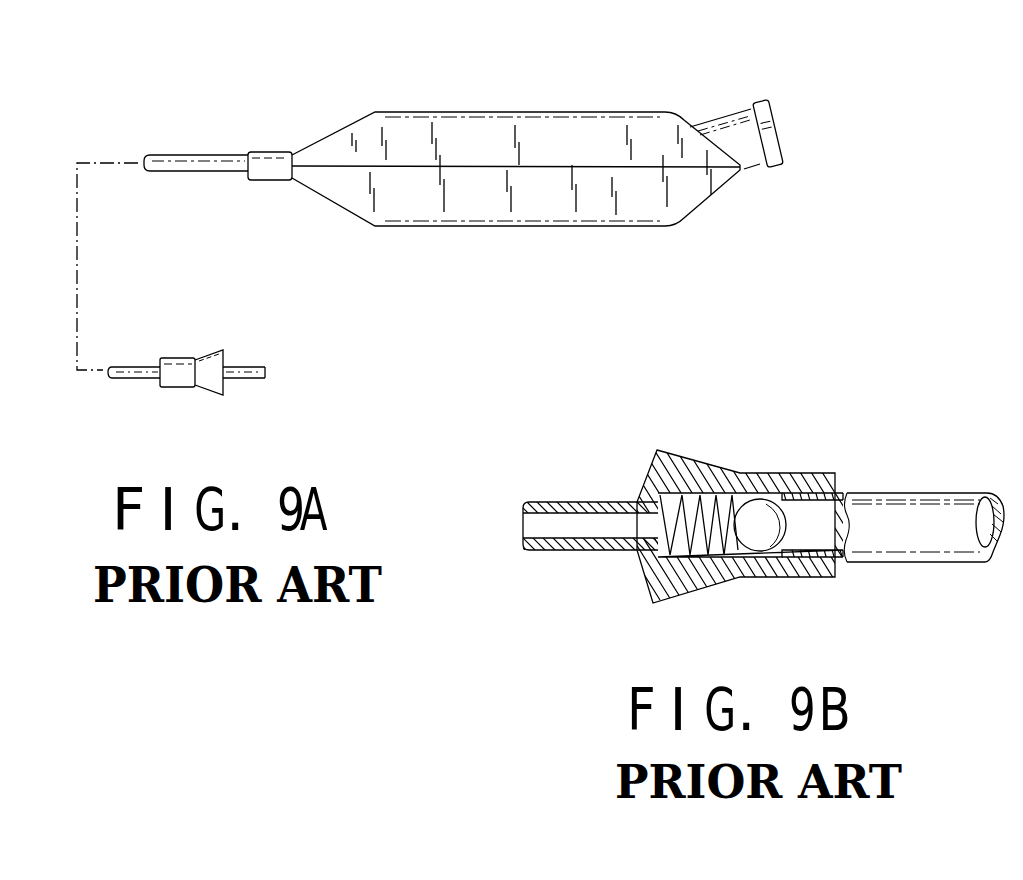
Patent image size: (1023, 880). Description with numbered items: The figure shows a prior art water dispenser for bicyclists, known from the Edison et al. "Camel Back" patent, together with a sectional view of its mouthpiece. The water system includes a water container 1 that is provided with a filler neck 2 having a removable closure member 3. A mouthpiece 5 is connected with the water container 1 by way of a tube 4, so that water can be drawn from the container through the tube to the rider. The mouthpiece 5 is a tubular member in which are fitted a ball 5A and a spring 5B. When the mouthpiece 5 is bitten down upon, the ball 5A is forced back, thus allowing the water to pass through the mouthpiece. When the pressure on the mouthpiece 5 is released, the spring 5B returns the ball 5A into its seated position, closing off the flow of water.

In FIG. 9A, the water container 1 is at (531, 112).
In FIG. 9A, the filler neck 2 is at (732, 114).
In FIG. 9A, the removable closure member 3 is at (777, 122).
In FIG. 9A, the tube 4 is at (183, 155).
In FIG. 9A, the mouthpiece 5 is at (193, 358).
In FIG. 9B, the mouthpiece 5 is at (710, 464).
In FIG. 9B, the ball 5A is at (758, 508).
In FIG. 9B, the spring 5B is at (710, 580).